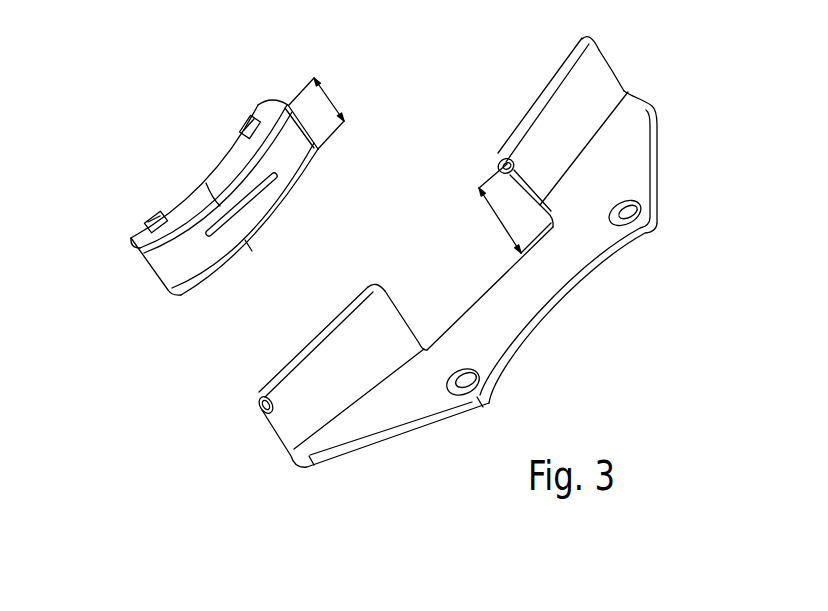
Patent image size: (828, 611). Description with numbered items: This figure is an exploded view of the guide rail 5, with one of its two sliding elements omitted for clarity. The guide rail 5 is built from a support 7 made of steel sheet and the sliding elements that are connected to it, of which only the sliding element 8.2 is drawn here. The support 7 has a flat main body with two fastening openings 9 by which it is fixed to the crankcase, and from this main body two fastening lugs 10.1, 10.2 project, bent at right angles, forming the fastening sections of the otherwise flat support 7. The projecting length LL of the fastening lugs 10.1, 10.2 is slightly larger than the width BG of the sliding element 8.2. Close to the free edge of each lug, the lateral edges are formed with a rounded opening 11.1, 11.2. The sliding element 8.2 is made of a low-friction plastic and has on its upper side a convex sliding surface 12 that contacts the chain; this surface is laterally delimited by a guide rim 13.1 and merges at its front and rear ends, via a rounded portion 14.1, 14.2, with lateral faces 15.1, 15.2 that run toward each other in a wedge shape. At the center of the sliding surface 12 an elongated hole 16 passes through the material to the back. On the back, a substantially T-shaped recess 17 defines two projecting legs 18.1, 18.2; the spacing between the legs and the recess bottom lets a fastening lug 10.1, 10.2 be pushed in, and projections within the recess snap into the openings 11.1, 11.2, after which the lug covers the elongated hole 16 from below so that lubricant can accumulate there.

The guide rail 5 is at (375, 243).
The support 7 is at (445, 243).
The sliding element 8.2 is at (223, 227).
The fastening opening 9 is at (642, 213).
The fastening lug 10.1 is at (560, 112).
The fastening lug 10.2 is at (313, 378).
The rounded opening 11.1 is at (600, 53).
The rounded opening 11.2 is at (500, 170).
The sliding surface 12 is at (181, 258).
The guide rim 13.1 is at (206, 186).
The rounded portion 14.1 is at (310, 128).
The rounded portion 14.2 is at (149, 271).
The lateral face 15.1 is at (280, 99).
The lateral face 15.2 is at (133, 245).
The elongated hole 16 is at (266, 190).
The recess 17 is at (214, 171).
The projecting leg 18.1 is at (242, 120).
The projecting leg 18.2 is at (148, 222).
The width of the sliding element BG is at (335, 109).
The projecting length of the fastening lug LL is at (497, 217).